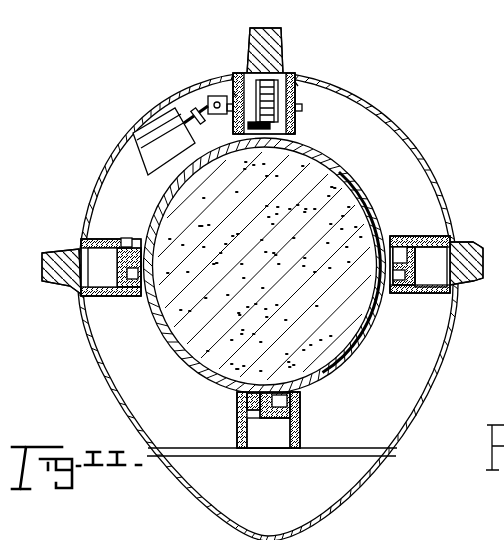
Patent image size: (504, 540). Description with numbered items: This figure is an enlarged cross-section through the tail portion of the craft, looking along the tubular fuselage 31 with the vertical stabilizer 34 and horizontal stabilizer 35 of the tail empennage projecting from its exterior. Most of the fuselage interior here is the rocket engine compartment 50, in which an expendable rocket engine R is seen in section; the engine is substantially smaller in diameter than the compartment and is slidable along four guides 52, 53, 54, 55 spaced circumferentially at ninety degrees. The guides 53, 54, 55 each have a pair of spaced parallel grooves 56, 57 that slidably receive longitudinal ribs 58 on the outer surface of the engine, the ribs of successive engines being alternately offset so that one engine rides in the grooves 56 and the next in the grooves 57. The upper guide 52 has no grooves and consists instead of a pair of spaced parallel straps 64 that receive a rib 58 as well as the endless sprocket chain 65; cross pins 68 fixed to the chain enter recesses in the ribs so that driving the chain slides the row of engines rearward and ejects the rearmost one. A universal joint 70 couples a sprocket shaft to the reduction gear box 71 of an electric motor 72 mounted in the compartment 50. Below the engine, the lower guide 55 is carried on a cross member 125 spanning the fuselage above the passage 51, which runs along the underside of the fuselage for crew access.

The fuselage 31 is at (415, 135).
The vertical stabilizer 34 is at (247, 33).
The horizontal stabilizer 35 is at (55, 252).
The rocket engine compartment 50 is at (412, 175).
The passage 51 is at (340, 503).
The guide 52 is at (295, 127).
The guide 53 is at (107, 300).
The guide 54 is at (432, 233).
The guide 55 is at (301, 423).
The groove 56 is at (128, 238).
The groove 57 is at (132, 300).
The longitudinal rib 58 is at (138, 250).
The strap 64 is at (233, 92).
The sprocket chain 65 is at (267, 87).
The cross pin 68 is at (250, 143).
The universal joint 70 is at (206, 98).
The reduction gear box 71 is at (173, 118).
The electric motor 72 is at (125, 143).
The cross member 125 is at (222, 458).
The rocket engine R is at (345, 172).